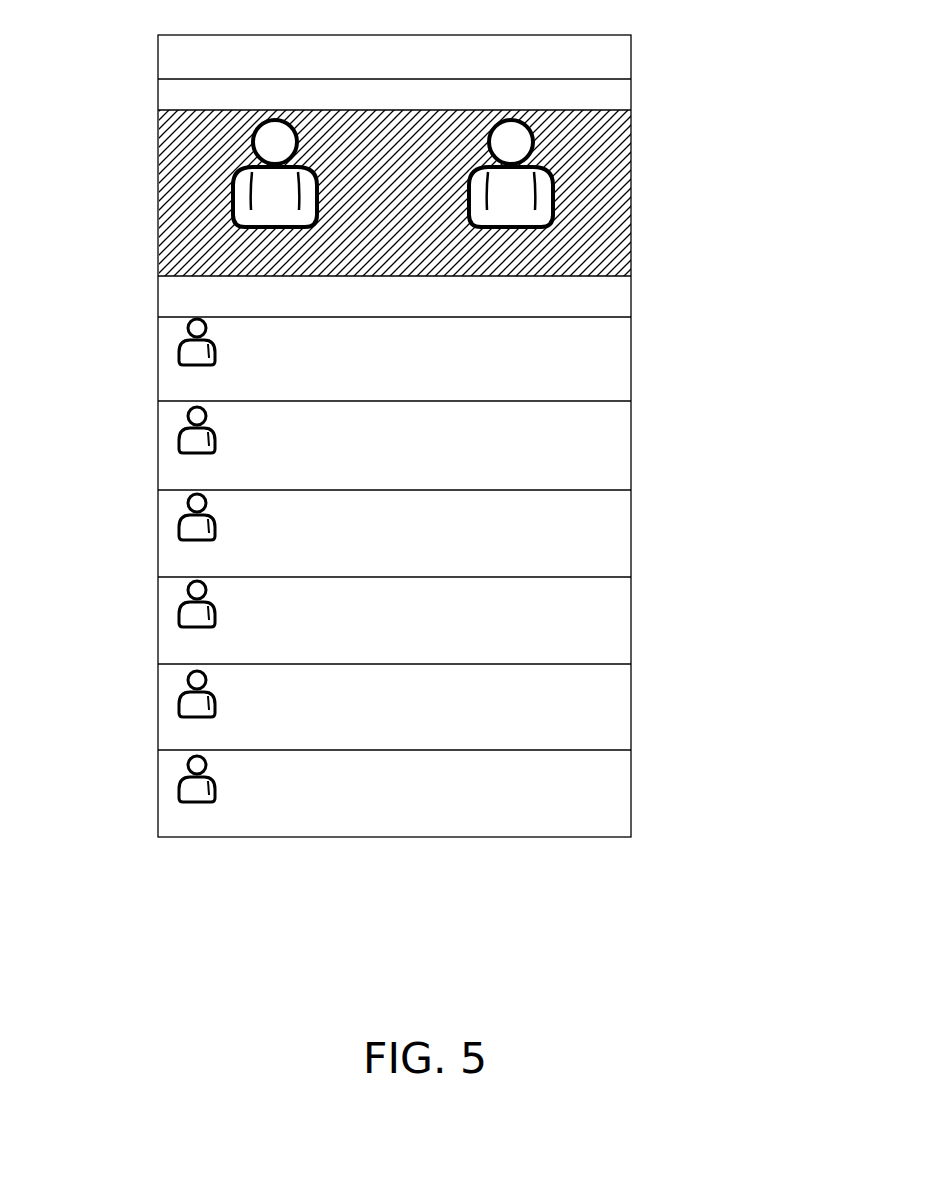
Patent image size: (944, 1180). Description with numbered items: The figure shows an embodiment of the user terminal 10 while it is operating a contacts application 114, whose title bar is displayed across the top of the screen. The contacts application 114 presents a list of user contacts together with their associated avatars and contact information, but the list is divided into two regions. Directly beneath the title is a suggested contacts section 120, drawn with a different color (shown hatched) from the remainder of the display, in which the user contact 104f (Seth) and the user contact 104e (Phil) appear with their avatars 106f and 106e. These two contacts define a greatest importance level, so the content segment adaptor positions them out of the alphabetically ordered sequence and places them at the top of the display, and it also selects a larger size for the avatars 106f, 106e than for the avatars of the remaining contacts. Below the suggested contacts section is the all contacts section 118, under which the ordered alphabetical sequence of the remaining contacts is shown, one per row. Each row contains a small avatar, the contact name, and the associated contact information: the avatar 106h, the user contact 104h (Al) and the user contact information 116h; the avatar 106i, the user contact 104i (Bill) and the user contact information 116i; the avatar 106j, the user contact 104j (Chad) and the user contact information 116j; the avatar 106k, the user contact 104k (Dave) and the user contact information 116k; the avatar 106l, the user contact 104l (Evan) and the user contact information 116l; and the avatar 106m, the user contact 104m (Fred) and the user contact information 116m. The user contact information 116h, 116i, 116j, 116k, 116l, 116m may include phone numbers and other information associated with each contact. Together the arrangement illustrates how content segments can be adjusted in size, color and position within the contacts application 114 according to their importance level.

The user terminal 10 is at (632, 35).
The contacts application 114 is at (380, 43).
The suggested contacts section 120 is at (165, 93).
The all contacts section 118 is at (165, 293).
The avatar 106f is at (240, 170).
The user contact 104f is at (252, 243).
The avatar 106e is at (552, 177).
The user contact 104e is at (528, 248).
The avatar 106h is at (180, 342).
The user contact 104h is at (188, 385).
The user contact information 116h is at (610, 352).
The avatar 106i is at (180, 433).
The user contact 104i is at (182, 470).
The user contact information 116i is at (610, 438).
The avatar 106j is at (182, 517).
The user contact 104j is at (170, 555).
The user contact information 116j is at (613, 533).
The avatar 106k is at (180, 605).
The user contact 104k is at (170, 643).
The user contact information 116k is at (613, 617).
The avatar 106l is at (180, 695).
The user contact 104l is at (170, 732).
The user contact information 116l is at (613, 700).
The avatar 106m is at (180, 780).
The user contact 104m is at (170, 817).
The user contact information 116m is at (613, 793).